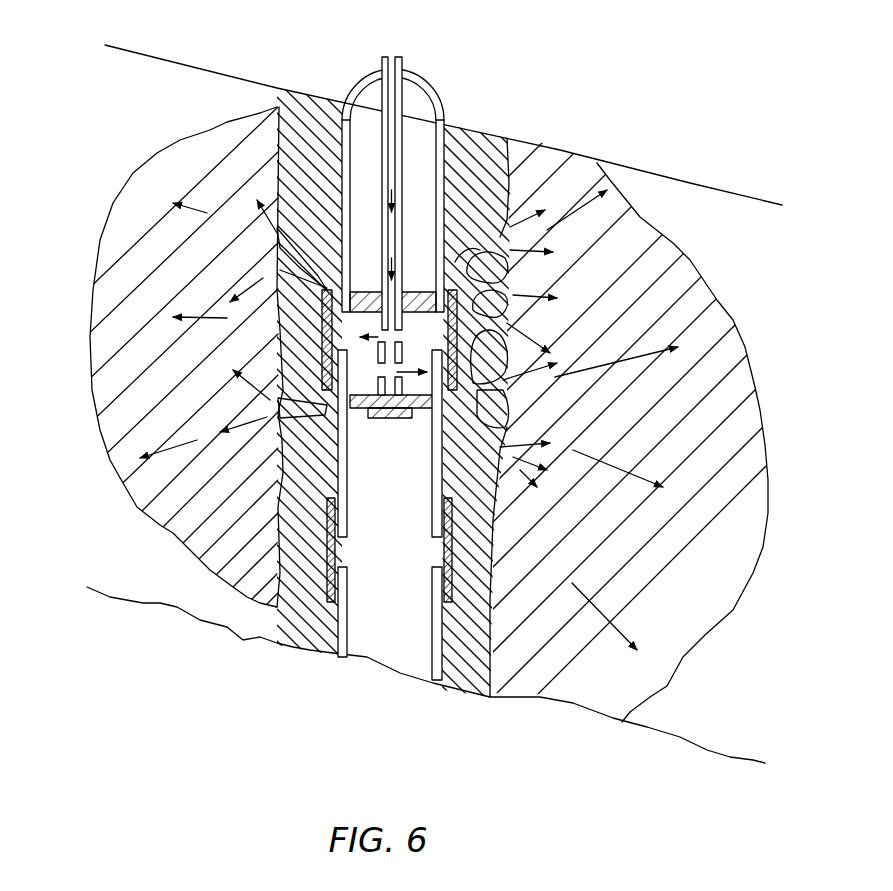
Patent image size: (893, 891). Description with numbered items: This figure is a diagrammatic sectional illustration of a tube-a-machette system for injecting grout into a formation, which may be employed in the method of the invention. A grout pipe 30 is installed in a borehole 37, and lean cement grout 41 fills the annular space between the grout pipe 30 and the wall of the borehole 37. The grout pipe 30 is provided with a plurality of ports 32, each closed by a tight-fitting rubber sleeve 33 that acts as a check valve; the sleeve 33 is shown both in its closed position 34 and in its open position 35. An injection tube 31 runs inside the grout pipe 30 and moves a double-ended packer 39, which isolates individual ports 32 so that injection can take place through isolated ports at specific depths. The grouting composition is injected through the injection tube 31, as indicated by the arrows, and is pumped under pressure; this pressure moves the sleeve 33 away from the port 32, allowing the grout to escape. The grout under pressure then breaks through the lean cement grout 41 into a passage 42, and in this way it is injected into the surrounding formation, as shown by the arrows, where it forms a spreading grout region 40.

The grout pipe 30 is at (438, 86).
The injection tube 31 is at (381, 120).
The ports 32 is at (462, 296).
The rubber sleeves 33 is at (327, 290).
The closed position 34 is at (330, 588).
The open position 35 is at (277, 403).
The borehole 37 is at (493, 632).
The double-ended packer 39 is at (413, 425).
The spreading grout region 40 is at (607, 263).
The lean cement grout 41 is at (458, 695).
The passage 42 is at (453, 393).